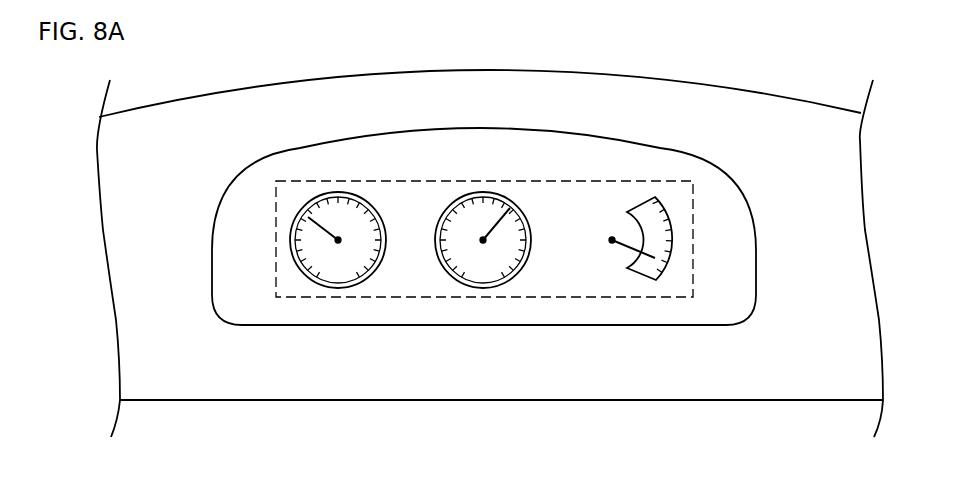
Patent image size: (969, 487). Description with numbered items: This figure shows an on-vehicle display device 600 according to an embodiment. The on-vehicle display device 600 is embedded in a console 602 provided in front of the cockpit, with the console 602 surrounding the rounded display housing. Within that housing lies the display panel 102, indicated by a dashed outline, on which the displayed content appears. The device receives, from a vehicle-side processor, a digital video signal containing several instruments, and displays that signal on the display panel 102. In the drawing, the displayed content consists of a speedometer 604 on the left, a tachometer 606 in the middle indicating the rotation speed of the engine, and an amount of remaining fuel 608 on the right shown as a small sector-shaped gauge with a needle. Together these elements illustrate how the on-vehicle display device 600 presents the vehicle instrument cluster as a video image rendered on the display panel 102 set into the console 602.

The on-vehicle display device 600 is at (497, 157).
The console 602 is at (755, 117).
The display panel 102 is at (694, 221).
The speedometer 604 is at (308, 280).
The tachometer 606 is at (455, 277).
The amount of remaining fuel 608 is at (633, 283).